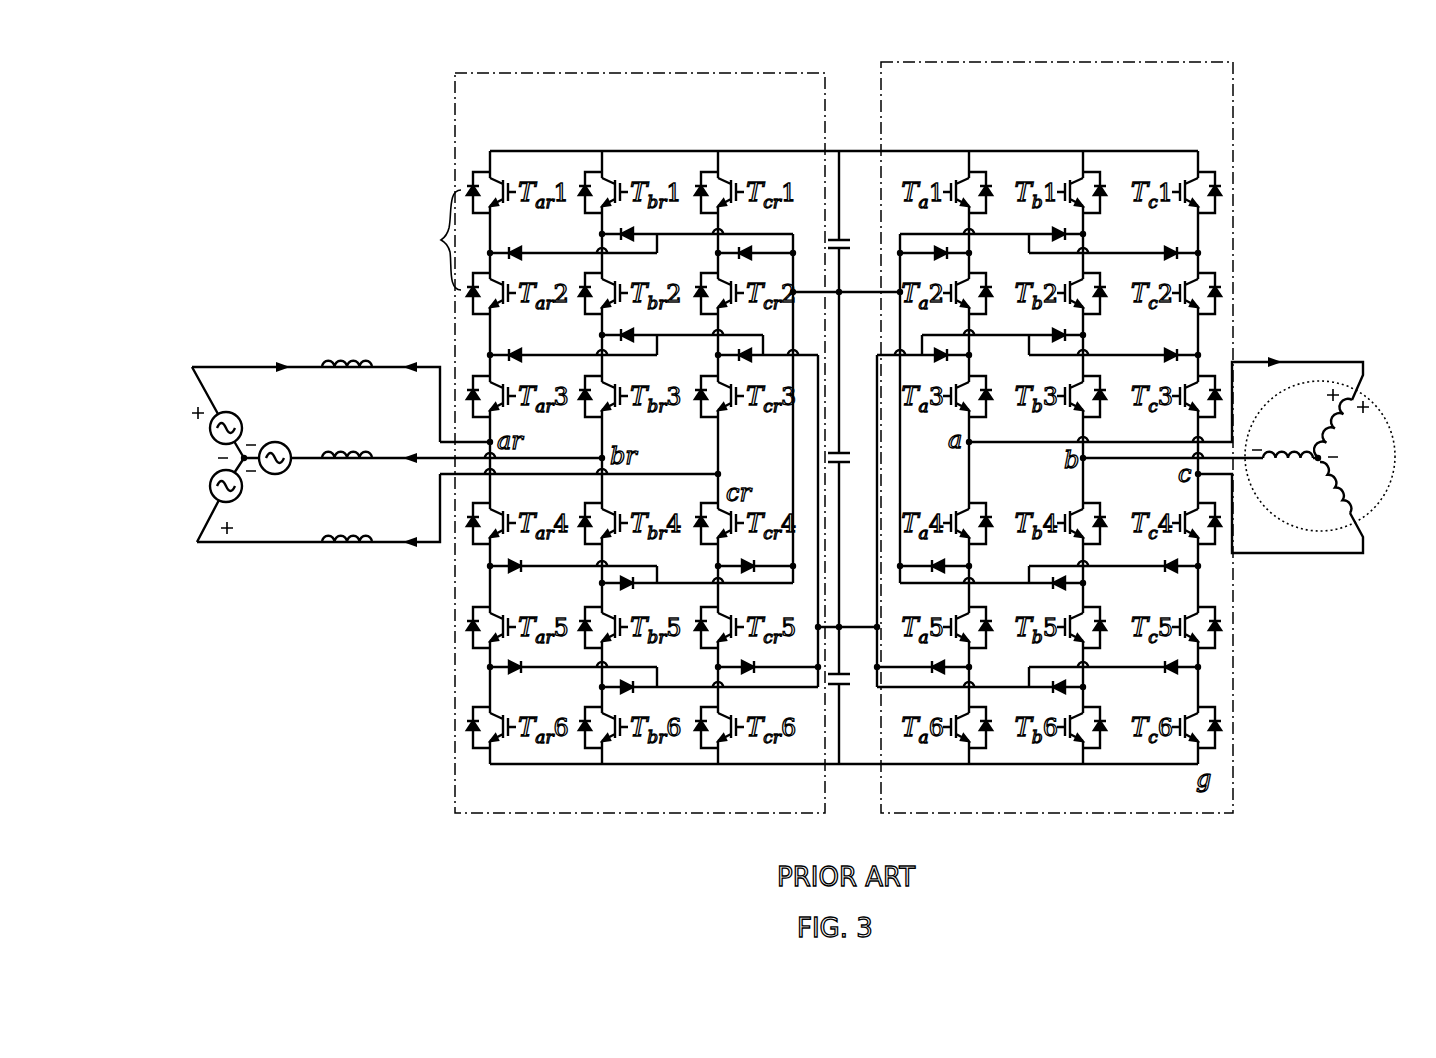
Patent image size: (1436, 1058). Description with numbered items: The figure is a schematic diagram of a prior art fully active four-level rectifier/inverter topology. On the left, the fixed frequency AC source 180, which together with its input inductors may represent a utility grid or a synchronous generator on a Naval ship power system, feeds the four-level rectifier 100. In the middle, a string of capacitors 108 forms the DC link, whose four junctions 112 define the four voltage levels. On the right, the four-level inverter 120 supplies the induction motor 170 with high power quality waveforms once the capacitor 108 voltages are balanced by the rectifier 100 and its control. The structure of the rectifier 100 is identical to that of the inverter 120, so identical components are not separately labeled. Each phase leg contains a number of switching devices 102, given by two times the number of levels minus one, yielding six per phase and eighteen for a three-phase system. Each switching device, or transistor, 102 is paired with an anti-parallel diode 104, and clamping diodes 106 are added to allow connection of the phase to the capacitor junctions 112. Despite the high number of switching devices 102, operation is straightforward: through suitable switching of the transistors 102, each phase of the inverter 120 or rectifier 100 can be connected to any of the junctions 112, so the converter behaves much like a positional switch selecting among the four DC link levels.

The four-level rectifier 100 is at (585, 814).
The switching device 102 is at (513, 178).
The anti-parallel diode 104 is at (424, 240).
The clamping diode 106 is at (630, 228).
The capacitor 108 is at (842, 238).
The junction 112 is at (834, 290).
The four-level inverter 120 is at (1060, 814).
The induction motor 170 is at (1340, 357).
The fixed frequency AC source 180 is at (222, 388).